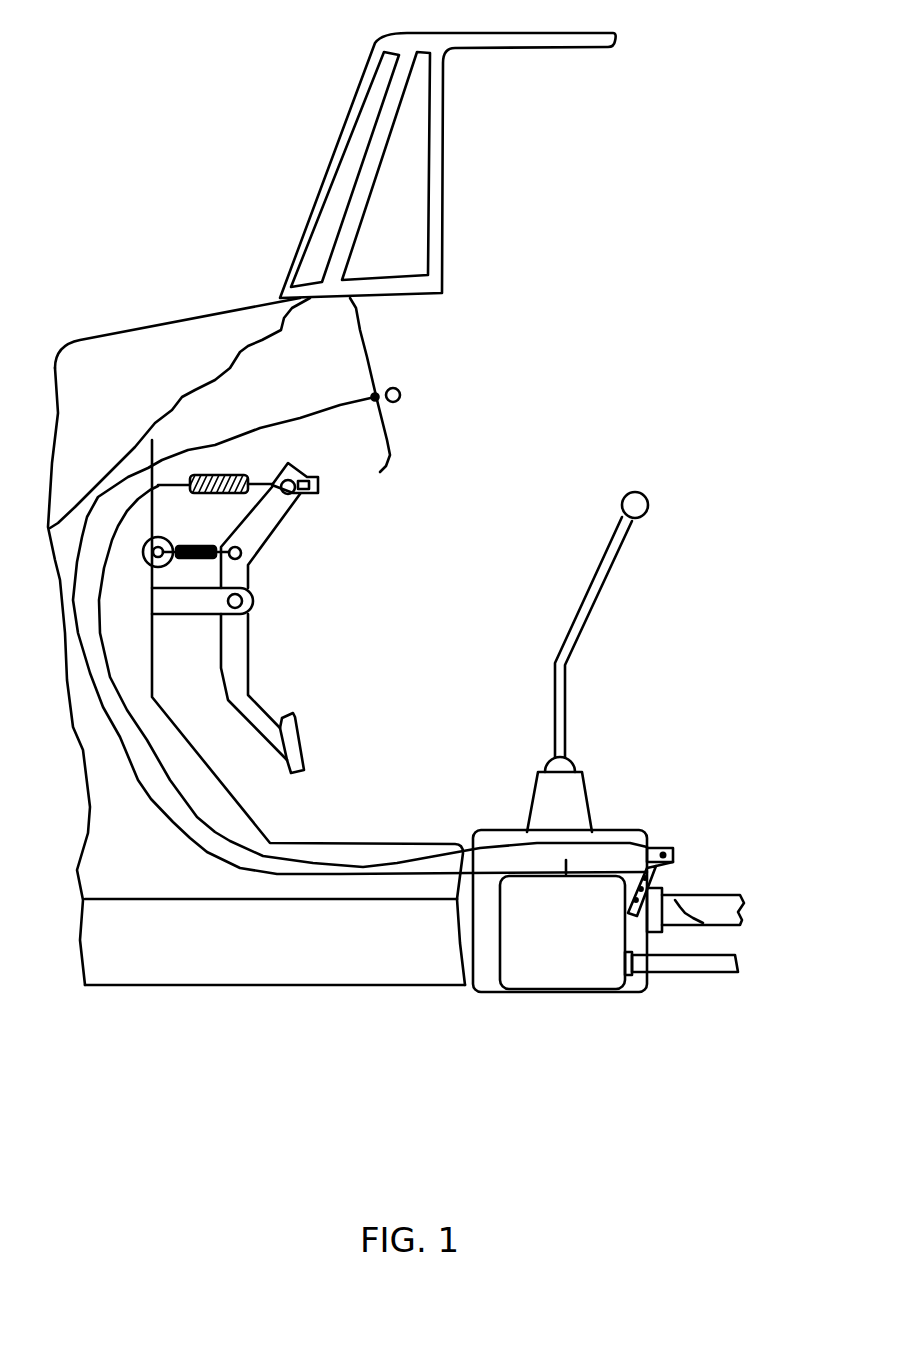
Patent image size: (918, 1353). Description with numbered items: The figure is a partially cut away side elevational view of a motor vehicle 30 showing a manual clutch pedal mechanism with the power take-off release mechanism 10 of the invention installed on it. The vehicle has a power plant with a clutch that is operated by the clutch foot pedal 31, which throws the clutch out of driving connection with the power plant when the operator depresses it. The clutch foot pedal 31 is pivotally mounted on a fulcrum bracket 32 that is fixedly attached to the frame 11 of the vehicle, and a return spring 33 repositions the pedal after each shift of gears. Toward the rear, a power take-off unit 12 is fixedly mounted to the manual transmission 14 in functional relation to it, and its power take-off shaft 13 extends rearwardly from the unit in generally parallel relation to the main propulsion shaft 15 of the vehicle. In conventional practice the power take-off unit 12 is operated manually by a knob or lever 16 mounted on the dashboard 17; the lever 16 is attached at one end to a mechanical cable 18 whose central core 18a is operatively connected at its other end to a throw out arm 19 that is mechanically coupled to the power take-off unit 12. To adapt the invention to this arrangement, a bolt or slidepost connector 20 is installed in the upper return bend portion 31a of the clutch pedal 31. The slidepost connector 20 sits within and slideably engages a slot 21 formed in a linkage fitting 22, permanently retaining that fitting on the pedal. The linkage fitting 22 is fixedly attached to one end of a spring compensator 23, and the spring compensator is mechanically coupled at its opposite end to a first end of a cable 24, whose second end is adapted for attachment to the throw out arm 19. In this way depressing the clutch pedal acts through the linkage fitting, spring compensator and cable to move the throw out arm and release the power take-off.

The power take-off release mechanism 10 is at (327, 440).
The frame 11 is at (256, 673).
The power take-off unit 12 is at (562, 979).
The power take-off shaft 13 is at (694, 998).
The manual transmission 14 is at (530, 958).
The main propulsion shaft 15 is at (653, 699).
The lever 16 is at (440, 374).
The dashboard 17 is at (426, 382).
The mechanical cable 18 is at (360, 614).
The central core 18a is at (604, 902).
The throw out arm 19 is at (727, 927).
The slidepost connector 20 is at (346, 522).
The slot 21 is at (378, 466).
The linkage fitting 22 is at (384, 500).
The spring compensator 23 is at (246, 429).
The cable 24 is at (416, 812).
The motor vehicle 30 is at (278, 152).
The clutch foot pedal 31 is at (297, 630).
The return bend portion 31a is at (305, 572).
The fulcrum bracket 32 is at (246, 621).
The return spring 33 is at (187, 532).